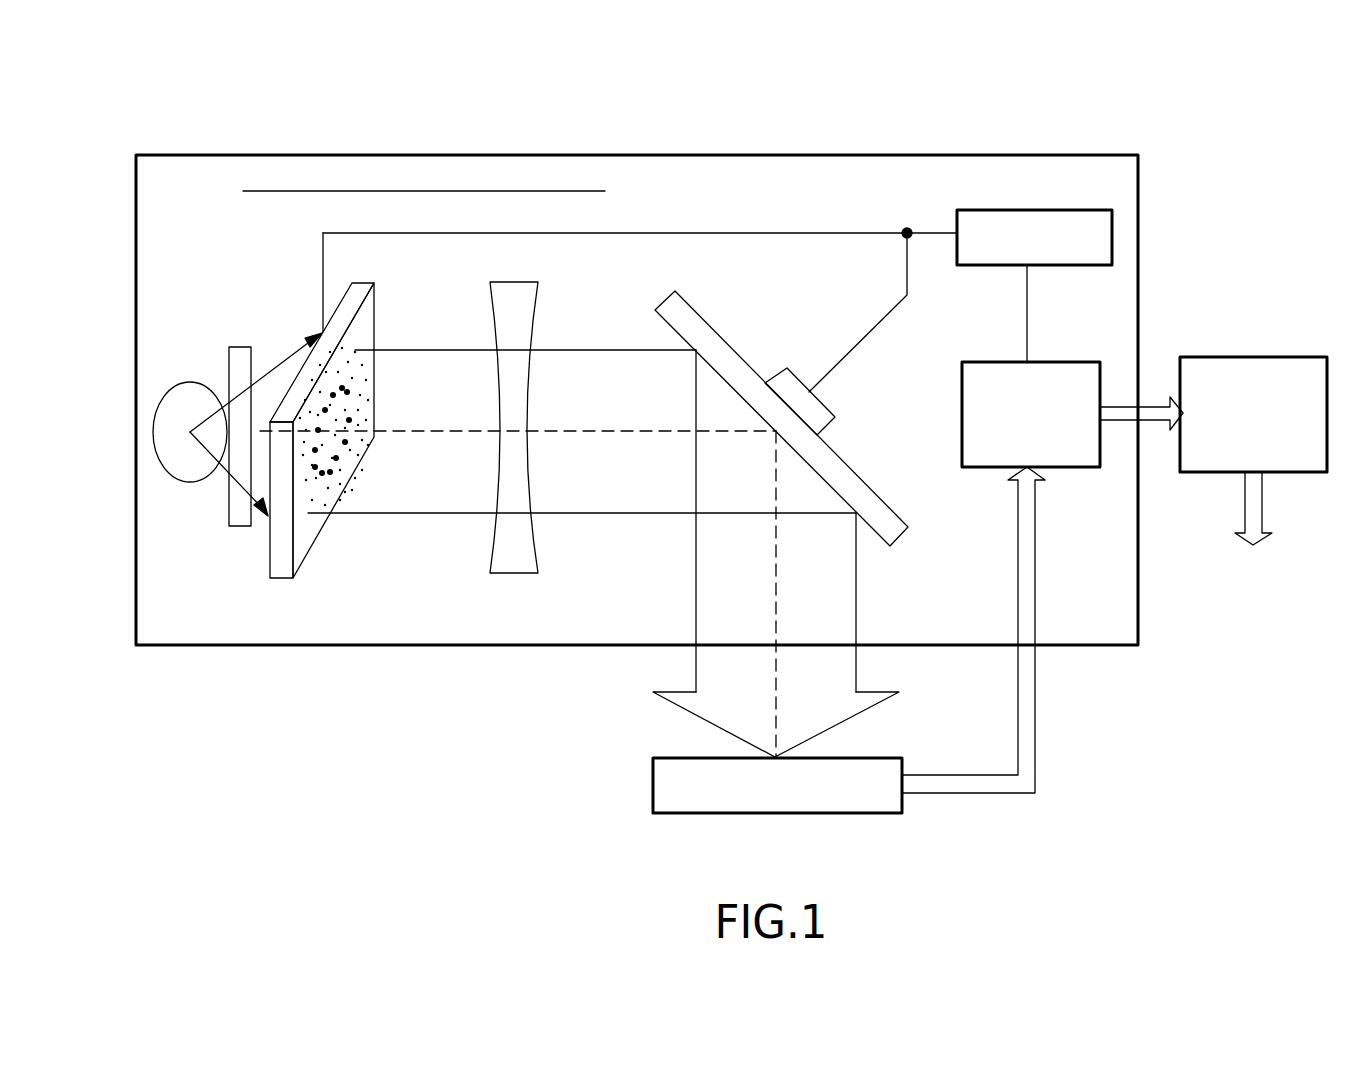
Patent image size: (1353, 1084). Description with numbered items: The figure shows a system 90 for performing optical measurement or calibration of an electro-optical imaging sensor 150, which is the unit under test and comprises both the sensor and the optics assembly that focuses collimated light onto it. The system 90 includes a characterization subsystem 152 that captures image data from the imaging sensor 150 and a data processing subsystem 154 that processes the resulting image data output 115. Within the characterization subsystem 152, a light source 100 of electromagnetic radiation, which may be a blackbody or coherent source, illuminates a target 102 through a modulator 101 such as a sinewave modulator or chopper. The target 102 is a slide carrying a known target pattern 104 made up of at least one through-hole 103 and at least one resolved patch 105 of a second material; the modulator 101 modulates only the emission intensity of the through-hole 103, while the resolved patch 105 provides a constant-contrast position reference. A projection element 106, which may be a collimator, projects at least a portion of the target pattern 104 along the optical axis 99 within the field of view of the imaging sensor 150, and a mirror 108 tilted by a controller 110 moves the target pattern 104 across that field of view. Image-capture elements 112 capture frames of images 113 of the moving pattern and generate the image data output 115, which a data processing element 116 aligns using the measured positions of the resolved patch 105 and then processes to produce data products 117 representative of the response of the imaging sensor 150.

The system 90 is at (1240, 130).
The optical axis 99 is at (645, 431).
The light source 100 is at (162, 407).
The modulator 101 is at (240, 347).
The target 102 is at (350, 562).
The through-hole 103 is at (350, 455).
The target pattern 104 is at (370, 320).
The resolved patch 105 is at (350, 402).
The projection element 106 is at (515, 282).
The mirror 108 is at (707, 325).
The controller 110 is at (1072, 210).
The image-capture elements 112 is at (1080, 362).
The frames of images 113 is at (1035, 710).
The image data output 115 is at (1152, 403).
The data processing element 116 is at (1281, 357).
The data products 117 is at (1245, 503).
The imaging sensor 150 is at (665, 813).
The characterization subsystem 152 is at (1100, 155).
The data processing subsystem 154 is at (1228, 292).